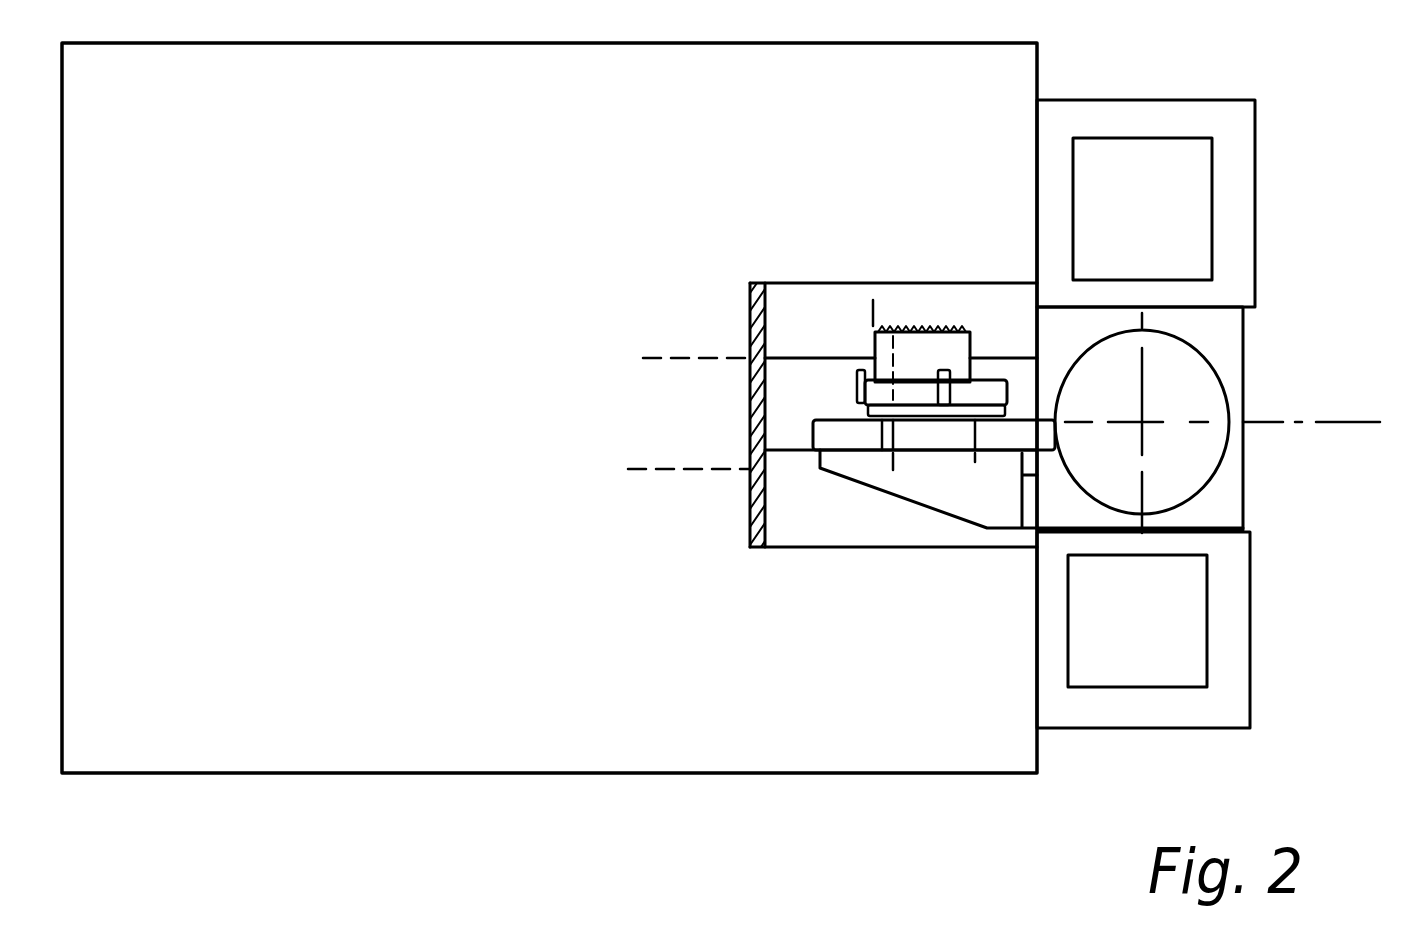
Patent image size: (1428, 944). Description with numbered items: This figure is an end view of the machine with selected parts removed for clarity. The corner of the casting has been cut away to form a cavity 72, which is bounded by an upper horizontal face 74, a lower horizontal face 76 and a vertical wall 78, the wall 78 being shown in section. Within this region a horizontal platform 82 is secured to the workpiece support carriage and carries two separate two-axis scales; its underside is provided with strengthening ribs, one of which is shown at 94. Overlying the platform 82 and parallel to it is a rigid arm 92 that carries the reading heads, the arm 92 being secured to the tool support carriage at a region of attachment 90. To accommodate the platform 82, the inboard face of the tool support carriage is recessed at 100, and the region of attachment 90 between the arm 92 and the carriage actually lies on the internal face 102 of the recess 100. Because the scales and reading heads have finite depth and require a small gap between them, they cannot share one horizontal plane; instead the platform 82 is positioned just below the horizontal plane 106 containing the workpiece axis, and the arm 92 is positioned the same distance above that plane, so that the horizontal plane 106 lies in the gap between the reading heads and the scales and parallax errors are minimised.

The cavity 72 is at (822, 338).
The upper horizontal face 74 is at (920, 282).
The lower horizontal face 76 is at (868, 552).
The vertical wall 78 is at (766, 508).
The horizontal platform 82 is at (815, 432).
The region of attachment 90 is at (955, 325).
The rigid arm 92 is at (1007, 418).
The strengthening rib 94 is at (995, 510).
The recess 100 is at (873, 300).
The internal face 102 is at (832, 409).
The horizontal plane 106 is at (1325, 421).